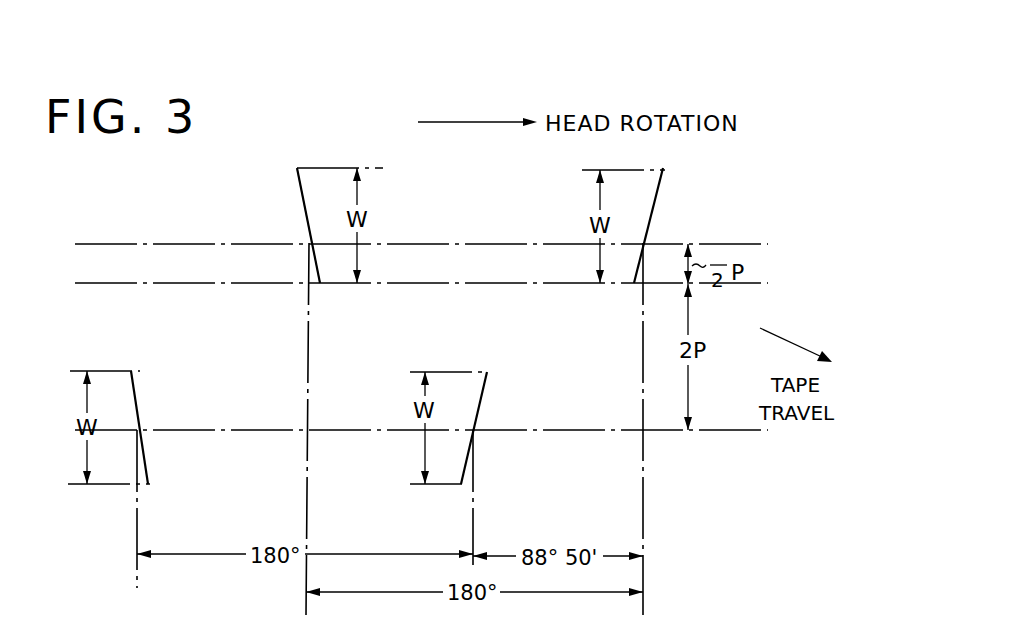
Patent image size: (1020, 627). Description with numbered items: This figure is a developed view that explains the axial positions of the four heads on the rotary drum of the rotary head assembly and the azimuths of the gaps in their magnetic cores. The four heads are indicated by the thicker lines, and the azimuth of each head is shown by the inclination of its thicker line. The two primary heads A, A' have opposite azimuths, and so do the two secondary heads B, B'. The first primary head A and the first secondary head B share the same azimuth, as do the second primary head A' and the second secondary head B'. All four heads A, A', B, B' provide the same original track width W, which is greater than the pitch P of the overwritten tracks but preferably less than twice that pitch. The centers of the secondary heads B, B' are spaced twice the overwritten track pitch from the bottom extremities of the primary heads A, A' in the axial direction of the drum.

The first primary head A is at (657, 221).
The second primary head A' is at (302, 214).
The first secondary head B is at (491, 421).
The second secondary head B' is at (151, 419).